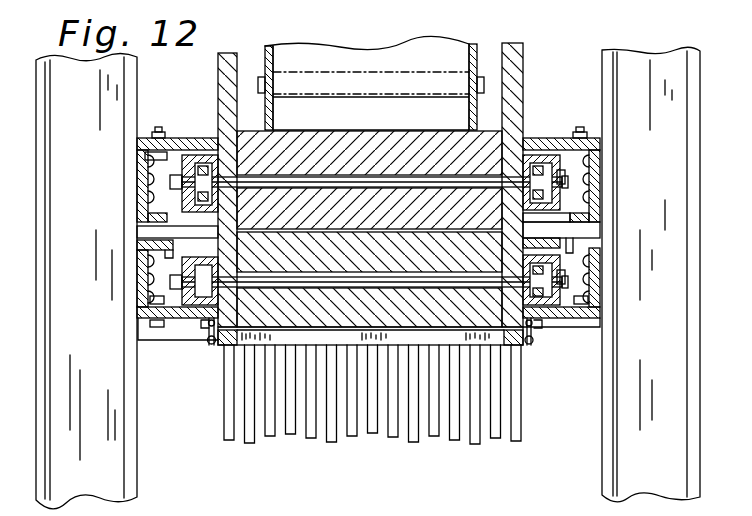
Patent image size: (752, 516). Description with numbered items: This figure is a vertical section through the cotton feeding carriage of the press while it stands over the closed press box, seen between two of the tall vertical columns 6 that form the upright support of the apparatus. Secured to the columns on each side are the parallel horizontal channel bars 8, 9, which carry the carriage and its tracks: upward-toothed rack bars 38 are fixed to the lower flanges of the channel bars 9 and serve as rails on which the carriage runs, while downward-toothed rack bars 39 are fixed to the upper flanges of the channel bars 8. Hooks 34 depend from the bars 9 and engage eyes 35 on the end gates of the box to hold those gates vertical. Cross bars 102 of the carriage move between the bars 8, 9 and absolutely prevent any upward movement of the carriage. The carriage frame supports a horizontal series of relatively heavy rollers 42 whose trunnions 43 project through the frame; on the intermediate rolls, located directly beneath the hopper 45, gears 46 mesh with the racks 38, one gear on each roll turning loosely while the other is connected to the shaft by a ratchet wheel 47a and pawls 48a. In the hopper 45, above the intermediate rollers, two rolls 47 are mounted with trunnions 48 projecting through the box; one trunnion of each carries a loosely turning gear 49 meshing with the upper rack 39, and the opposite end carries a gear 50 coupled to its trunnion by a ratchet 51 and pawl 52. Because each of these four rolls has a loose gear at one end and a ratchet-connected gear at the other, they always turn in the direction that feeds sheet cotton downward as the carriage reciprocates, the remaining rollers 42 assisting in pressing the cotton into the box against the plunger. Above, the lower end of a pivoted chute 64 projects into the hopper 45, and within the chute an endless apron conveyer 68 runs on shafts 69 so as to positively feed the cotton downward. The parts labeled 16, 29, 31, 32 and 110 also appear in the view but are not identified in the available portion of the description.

The vertical columns 6 is at (63, 312).
The channel bars 8 is at (148, 180).
The channel bars 9 is at (140, 280).
The lower bearing block 16 is at (184, 265).
The cooling fin assembly 29 is at (422, 432).
The cooling fin 31 is at (350, 434).
The outer fins 32 is at (225, 386).
The hooks 34 is at (208, 332).
The eyes 35 is at (630, 322).
The rack bars 38 is at (172, 328).
The rack bars 39 is at (173, 147).
The rollers 42 is at (310, 315).
The trunnions 43 is at (183, 279).
The hopper 45 is at (520, 78).
The gears 46 is at (404, 177).
The rolls 47 is at (367, 147).
The ratchet wheel 47a is at (570, 289).
The trunnions 48 is at (173, 186).
The pawls 48a is at (577, 260).
The gear 49 is at (588, 162).
The gear 50 is at (168, 158).
The ratchet 51 is at (170, 190).
The pawl 52 is at (169, 228).
The pivoted chute 64 is at (478, 44).
The endless apron conveyer 68 is at (298, 63).
The shafts 69 is at (346, 68).
The cross bars 102 is at (152, 234).
The retainer plate 110 is at (546, 214).